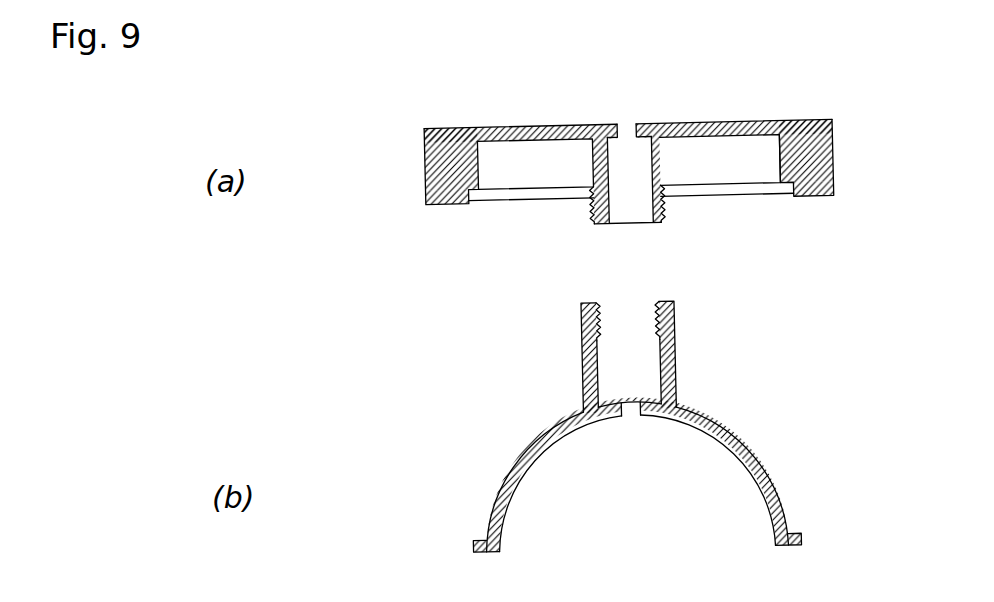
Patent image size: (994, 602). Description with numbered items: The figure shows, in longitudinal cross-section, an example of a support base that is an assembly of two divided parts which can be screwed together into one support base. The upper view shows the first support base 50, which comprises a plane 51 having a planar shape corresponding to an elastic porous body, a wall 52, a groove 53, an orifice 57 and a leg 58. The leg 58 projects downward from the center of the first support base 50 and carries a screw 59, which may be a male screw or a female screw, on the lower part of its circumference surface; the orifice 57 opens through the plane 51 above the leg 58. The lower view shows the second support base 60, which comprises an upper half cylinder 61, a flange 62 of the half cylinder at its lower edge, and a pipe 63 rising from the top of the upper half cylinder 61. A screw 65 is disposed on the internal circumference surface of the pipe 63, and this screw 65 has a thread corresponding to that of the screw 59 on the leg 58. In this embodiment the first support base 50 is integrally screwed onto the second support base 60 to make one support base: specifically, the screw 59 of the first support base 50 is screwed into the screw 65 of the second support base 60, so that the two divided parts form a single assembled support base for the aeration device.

The first support base 50 is at (713, 105).
The plane 51 is at (509, 128).
The wall 52 is at (437, 165).
The groove 53 is at (485, 200).
The orifice 57 is at (627, 126).
The leg 58 is at (597, 158).
The screw 59 is at (669, 216).
The second support base 60 is at (777, 475).
The upper half cylinder 61 is at (522, 450).
The flange 62 is at (470, 547).
The pipe 63 is at (678, 365).
The screw 65 is at (605, 313).